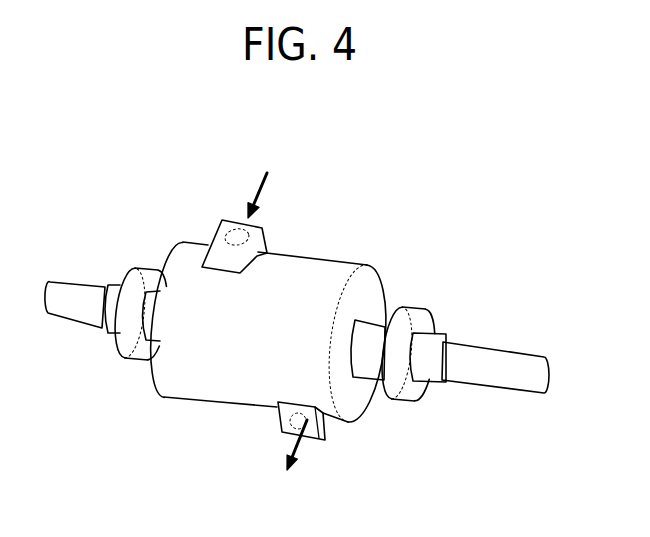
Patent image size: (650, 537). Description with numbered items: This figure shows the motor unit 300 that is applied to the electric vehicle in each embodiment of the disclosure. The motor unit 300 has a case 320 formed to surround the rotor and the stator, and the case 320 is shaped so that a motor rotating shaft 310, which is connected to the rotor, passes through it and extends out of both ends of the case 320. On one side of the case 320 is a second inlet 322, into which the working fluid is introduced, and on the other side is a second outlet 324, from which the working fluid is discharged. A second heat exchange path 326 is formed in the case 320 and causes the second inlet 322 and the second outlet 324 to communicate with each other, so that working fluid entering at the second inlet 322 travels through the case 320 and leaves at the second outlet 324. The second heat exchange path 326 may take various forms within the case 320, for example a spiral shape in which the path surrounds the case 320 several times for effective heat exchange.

The motor unit 300 is at (92, 138).
The motor rotating shaft 310 is at (492, 380).
The case 320 is at (325, 263).
The second inlet 322 is at (236, 222).
The second outlet 324 is at (336, 428).
The second heat exchange path 326 is at (278, 418).